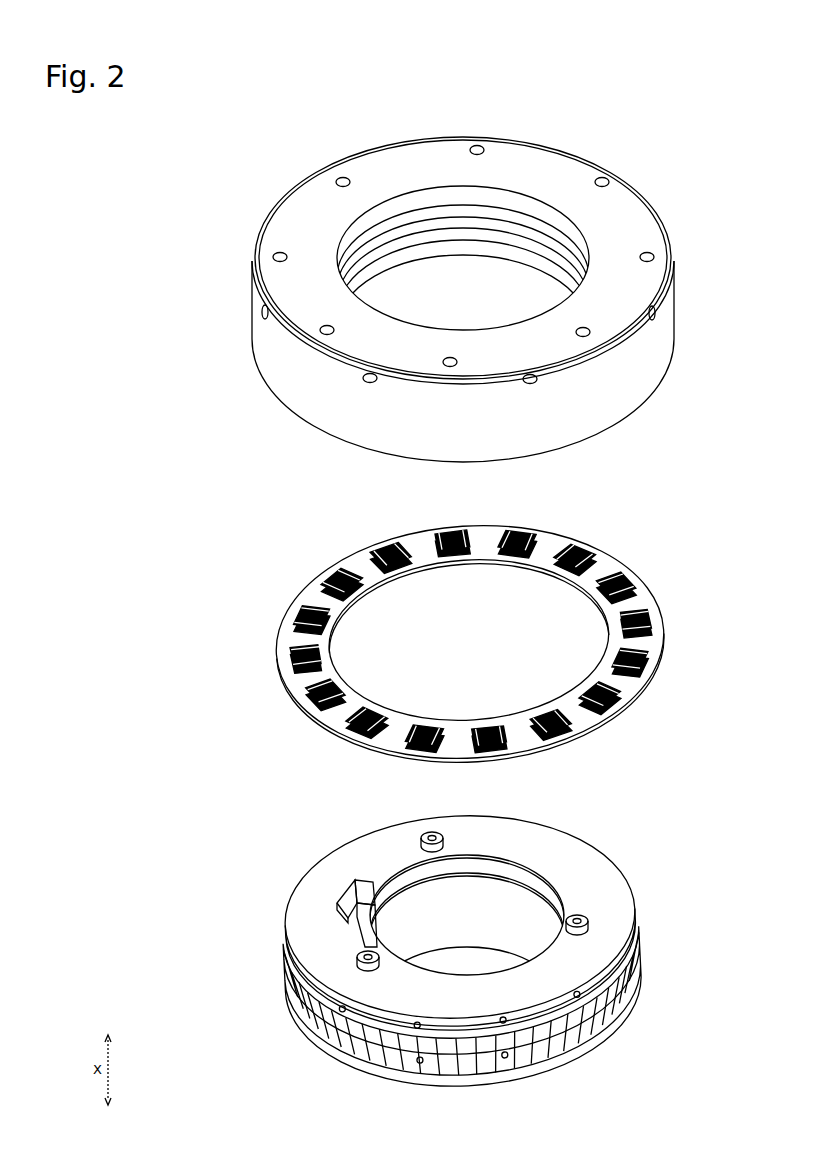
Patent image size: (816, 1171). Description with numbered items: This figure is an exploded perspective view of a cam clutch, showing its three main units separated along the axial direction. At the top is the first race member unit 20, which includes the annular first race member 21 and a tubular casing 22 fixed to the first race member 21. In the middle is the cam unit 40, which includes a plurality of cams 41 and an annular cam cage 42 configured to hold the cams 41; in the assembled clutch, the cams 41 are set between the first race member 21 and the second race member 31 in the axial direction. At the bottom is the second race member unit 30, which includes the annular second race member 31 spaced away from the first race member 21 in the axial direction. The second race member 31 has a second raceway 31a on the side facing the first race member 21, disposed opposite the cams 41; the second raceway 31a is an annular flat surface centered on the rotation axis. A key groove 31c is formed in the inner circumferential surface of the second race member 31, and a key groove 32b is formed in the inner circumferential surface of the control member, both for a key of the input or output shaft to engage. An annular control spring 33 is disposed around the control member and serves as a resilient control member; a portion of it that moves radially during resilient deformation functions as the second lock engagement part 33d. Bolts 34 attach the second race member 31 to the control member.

The first race member unit 20 is at (264, 181).
The first race member 21 is at (437, 163).
The tubular casing 22 is at (655, 347).
The cam unit 40 is at (265, 557).
The cams 41 is at (625, 582).
The cam cage 42 is at (625, 686).
The second race member unit 30 is at (263, 849).
The second race member 31 is at (595, 869).
The second raceway 31a is at (548, 836).
The key groove 31c is at (355, 895).
The key groove 32b is at (362, 930).
The control spring 33 is at (645, 968).
The second lock engagement part 33d is at (560, 1040).
The bolts 34 is at (428, 832).